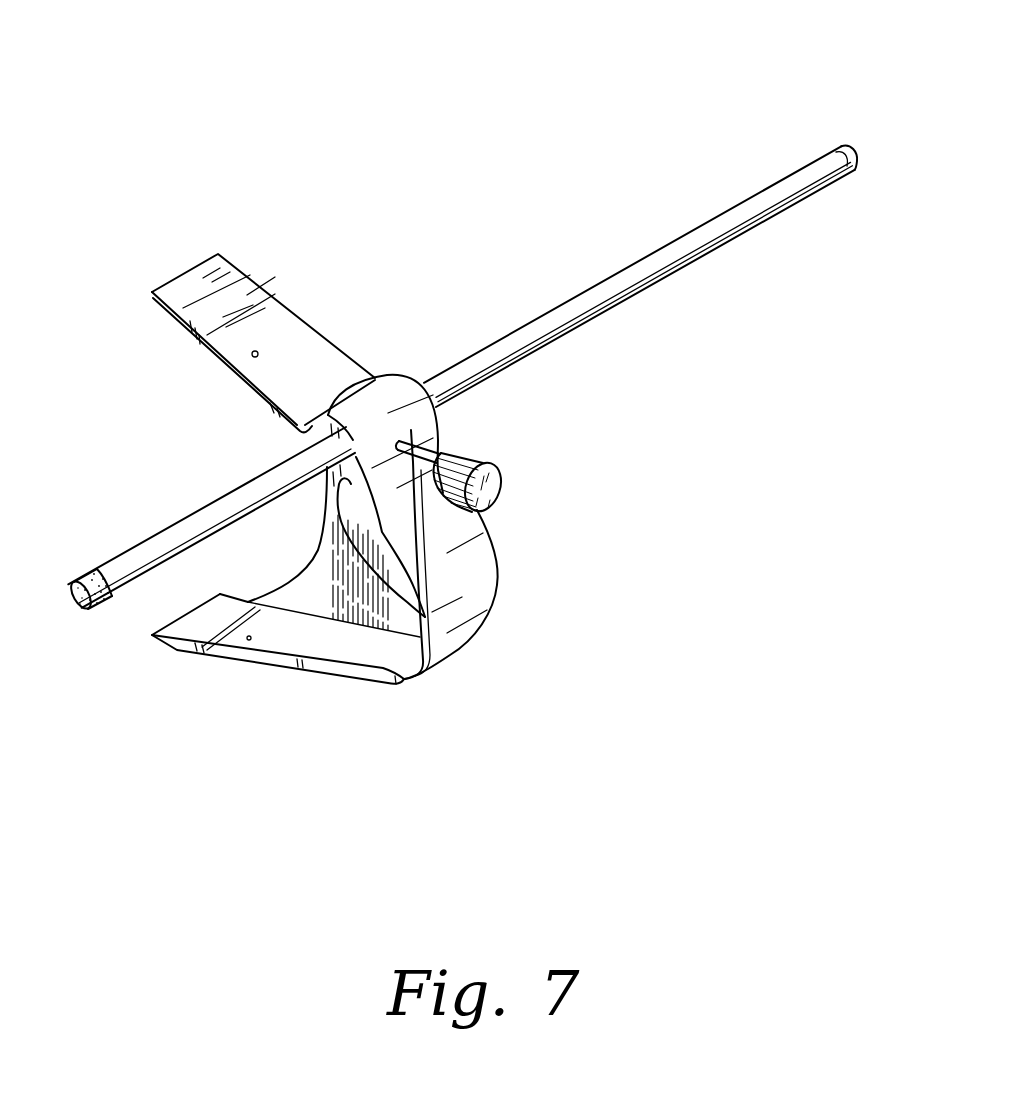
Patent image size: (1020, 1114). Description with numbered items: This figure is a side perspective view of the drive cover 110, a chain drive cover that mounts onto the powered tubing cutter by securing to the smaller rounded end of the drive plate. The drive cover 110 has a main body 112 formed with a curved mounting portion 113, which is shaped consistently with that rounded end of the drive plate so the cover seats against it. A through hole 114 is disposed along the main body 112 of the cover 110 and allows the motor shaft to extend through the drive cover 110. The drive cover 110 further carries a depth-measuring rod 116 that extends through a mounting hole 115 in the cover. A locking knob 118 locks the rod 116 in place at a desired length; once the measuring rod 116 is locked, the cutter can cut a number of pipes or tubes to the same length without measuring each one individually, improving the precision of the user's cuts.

The drive cover 110 is at (478, 115).
The main body 112 is at (339, 607).
The curved mounting portion 113 is at (318, 548).
The through hole 114 is at (421, 590).
The mounting hole 115 is at (303, 429).
The depth-measuring rod 116 is at (557, 308).
The locking knob 118 is at (500, 462).